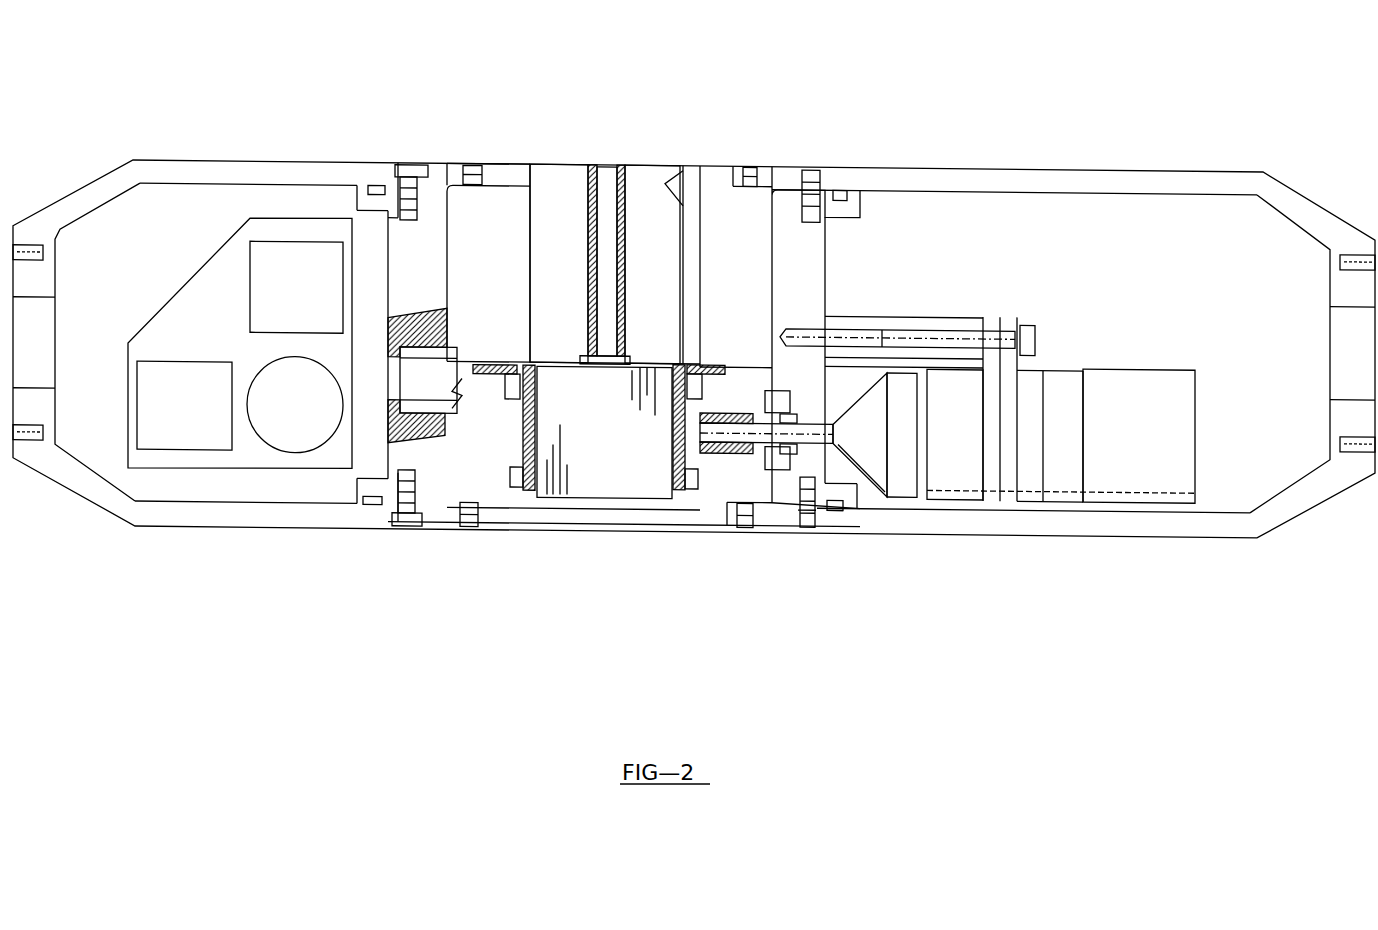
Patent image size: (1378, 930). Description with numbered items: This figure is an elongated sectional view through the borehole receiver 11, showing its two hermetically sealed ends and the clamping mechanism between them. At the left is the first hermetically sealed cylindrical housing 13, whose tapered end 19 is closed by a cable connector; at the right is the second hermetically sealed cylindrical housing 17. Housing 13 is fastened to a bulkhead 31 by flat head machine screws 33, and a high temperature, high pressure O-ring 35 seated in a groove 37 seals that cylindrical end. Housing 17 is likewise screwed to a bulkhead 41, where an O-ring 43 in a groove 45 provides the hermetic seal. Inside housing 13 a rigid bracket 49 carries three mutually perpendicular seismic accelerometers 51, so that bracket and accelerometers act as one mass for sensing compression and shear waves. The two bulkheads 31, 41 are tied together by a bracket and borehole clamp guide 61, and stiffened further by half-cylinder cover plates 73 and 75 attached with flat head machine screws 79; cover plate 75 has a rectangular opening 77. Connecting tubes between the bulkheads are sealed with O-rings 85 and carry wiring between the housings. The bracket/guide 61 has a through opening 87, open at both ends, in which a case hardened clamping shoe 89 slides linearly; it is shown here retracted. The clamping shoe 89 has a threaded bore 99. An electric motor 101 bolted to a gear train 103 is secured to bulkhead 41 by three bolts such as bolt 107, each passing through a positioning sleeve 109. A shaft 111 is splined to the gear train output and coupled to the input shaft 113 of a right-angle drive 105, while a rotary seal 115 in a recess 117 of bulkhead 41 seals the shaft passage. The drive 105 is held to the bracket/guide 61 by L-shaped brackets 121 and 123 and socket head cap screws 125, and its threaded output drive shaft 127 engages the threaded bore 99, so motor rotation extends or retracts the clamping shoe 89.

The borehole receiver 11 is at (987, 109).
The first hermetically sealed cylindrical housing 13 is at (293, 525).
The second hermetically sealed cylindrical housing 17 is at (1100, 527).
The tapered end 19 is at (107, 177).
The bulkhead 31 is at (442, 160).
The flat head machine screws 33 is at (405, 160).
The O-ring 35 is at (368, 510).
The groove 37 is at (367, 504).
The bulkhead 41 is at (810, 276).
The O-ring 43 is at (860, 155).
The groove 45 is at (848, 500).
The bracket 49 is at (193, 307).
The accelerometers 51 is at (283, 261).
The bracket and borehole clamp guide 61 is at (497, 250).
The half-cylinder cover plate 73 is at (585, 520).
The half-cylinder cover plate 75 is at (493, 159).
The rectangular opening 77 is at (535, 159).
The flat head machine screws 79 is at (473, 159).
The O-rings 85 is at (433, 427).
The through opening 87 is at (677, 157).
The clamping shoe 89 is at (645, 158).
The threaded bore 99 is at (593, 158).
The electric motor 101 is at (1143, 467).
The gear train 103 is at (960, 466).
The right-angle drive 105 is at (628, 436).
The bolt 107 is at (1038, 325).
The positioning sleeve 109 is at (945, 311).
The shaft 111 is at (875, 447).
The input shaft 113 is at (705, 427).
The rotary seal 115 is at (798, 523).
The recess 117 is at (800, 406).
The L-shaped bracket 121 is at (525, 458).
The L-shaped bracket 123 is at (680, 464).
The socket head cap screws 125 is at (513, 474).
The threaded output drive shaft 127 is at (602, 268).